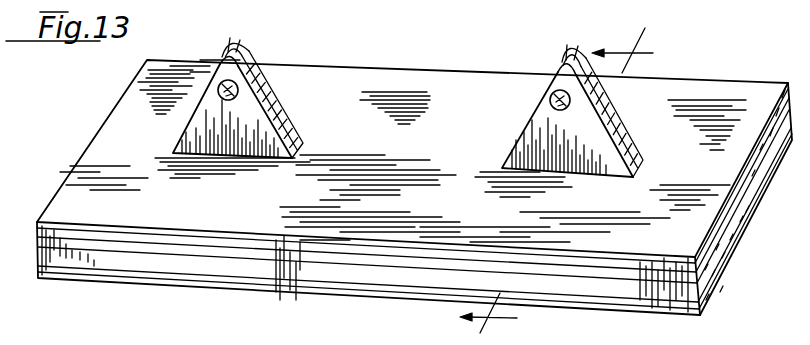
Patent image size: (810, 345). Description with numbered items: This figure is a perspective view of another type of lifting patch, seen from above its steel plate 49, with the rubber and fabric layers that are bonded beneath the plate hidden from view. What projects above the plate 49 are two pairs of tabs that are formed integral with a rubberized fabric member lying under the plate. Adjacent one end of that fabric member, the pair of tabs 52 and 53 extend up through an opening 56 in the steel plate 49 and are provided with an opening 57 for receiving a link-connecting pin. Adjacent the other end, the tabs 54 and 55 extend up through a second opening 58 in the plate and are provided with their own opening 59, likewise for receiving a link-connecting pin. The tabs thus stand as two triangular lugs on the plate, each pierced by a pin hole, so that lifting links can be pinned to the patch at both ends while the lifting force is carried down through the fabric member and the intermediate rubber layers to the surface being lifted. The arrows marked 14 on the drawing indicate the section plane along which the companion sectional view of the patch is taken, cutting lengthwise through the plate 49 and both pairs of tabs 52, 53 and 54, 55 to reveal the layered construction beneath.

The section line 14- 14 is at (570, 186).
The plate 49 is at (370, 87).
The tab 52 is at (620, 120).
The tab 53 is at (616, 98).
The tab 54 is at (246, 56).
The tab 55 is at (280, 104).
The opening 56 is at (596, 174).
The opening 57 is at (551, 97).
The opening 58 is at (250, 158).
The opening 59 is at (218, 92).